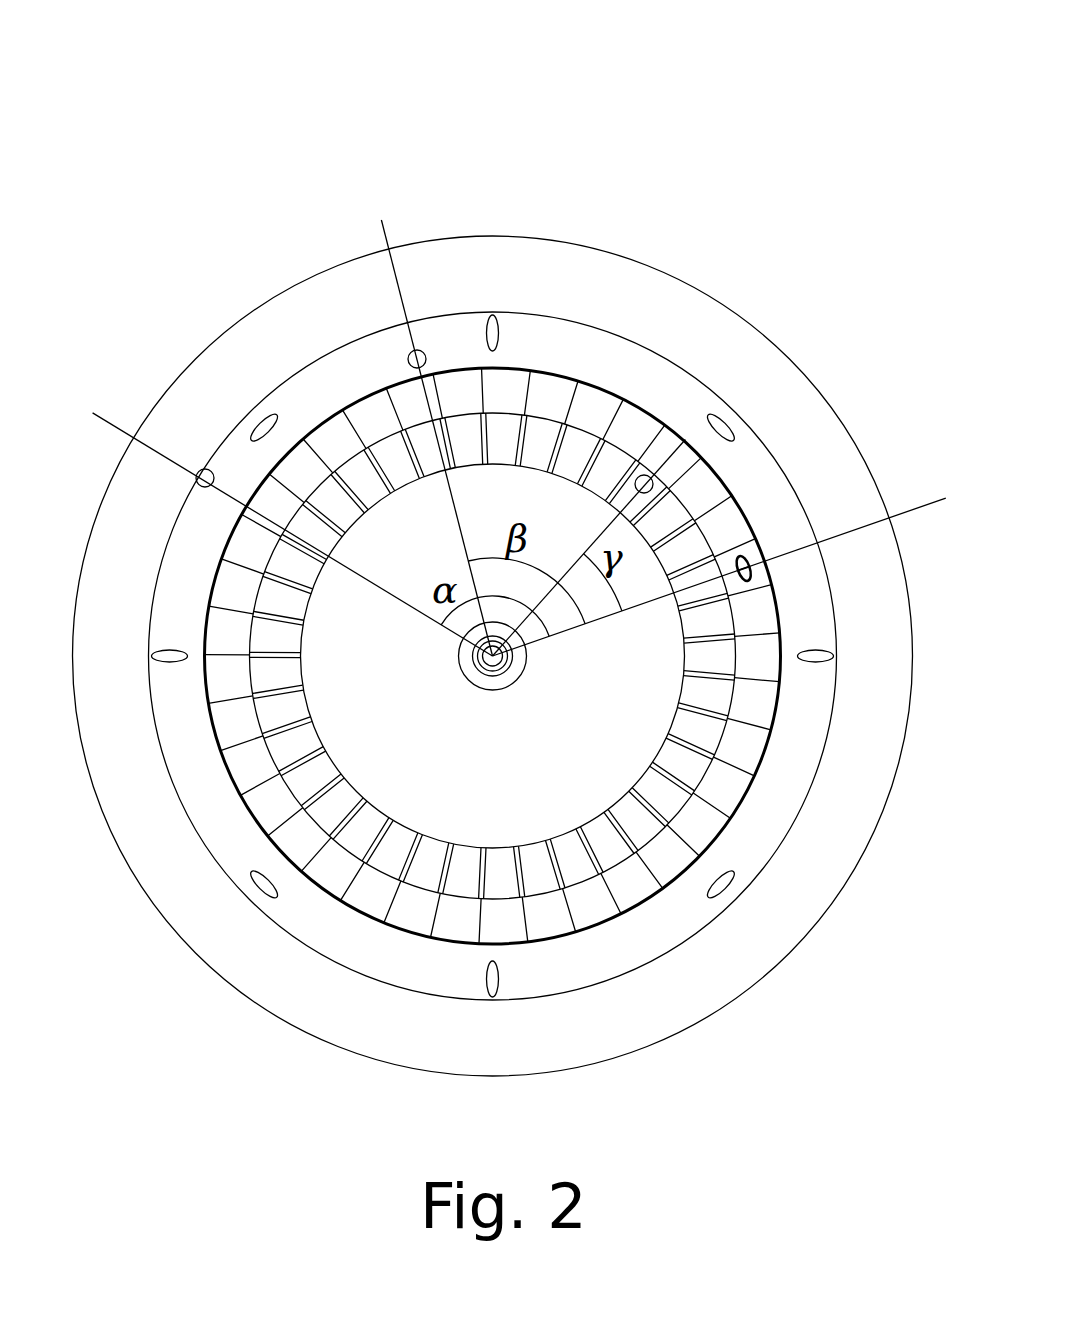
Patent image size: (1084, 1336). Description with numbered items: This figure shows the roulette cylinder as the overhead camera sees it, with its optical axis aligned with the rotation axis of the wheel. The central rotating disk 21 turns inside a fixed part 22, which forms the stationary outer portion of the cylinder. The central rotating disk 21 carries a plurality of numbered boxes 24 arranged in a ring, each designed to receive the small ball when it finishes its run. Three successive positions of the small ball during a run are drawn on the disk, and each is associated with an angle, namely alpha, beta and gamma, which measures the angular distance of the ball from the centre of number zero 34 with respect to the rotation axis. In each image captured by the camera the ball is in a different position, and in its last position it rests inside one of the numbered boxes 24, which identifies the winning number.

The number zero 34 is at (732, 540).
The numbered boxes 24 is at (277, 713).
The central rotating disk 21 is at (560, 788).
The fixed part 22 is at (337, 995).